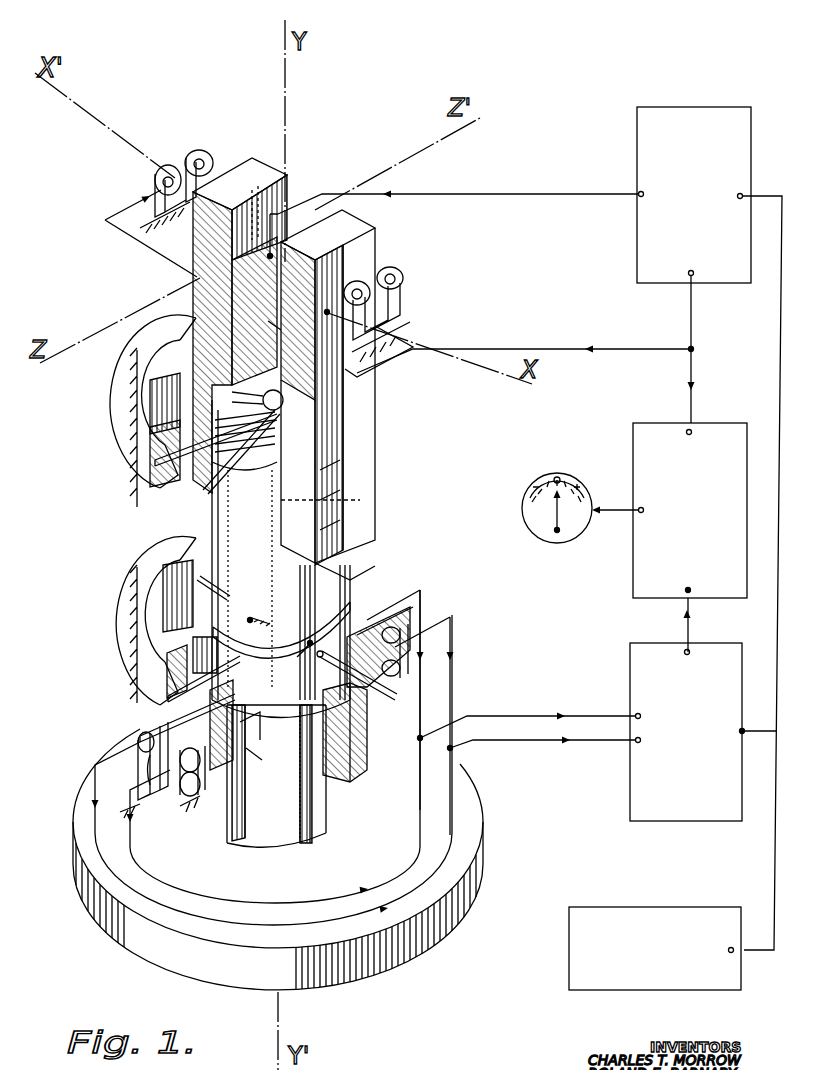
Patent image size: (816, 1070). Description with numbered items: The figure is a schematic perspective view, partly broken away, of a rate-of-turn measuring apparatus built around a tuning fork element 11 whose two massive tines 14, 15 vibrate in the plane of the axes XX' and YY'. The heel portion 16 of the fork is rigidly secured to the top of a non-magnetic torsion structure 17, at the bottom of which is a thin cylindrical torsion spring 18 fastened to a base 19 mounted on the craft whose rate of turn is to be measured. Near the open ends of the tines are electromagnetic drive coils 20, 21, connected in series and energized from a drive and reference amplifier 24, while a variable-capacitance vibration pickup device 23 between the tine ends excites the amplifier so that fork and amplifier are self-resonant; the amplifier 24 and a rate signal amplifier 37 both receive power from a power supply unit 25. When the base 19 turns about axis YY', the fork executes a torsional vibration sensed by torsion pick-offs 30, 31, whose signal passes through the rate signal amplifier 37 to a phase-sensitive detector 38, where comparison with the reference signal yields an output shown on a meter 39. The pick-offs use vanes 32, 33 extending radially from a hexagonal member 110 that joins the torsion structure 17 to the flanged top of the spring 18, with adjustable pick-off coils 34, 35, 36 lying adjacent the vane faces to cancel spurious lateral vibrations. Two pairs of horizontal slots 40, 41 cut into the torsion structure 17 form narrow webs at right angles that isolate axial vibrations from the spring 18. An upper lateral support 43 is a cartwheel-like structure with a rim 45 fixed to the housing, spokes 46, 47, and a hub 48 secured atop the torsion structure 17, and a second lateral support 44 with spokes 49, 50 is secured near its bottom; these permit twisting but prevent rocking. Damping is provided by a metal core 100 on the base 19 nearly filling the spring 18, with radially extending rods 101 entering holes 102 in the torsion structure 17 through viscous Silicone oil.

The tuning fork element 11 is at (378, 484).
The tine 14 is at (238, 172).
The tine 15 is at (362, 226).
The heel portion 16 is at (240, 514).
The torsion structure 17 is at (372, 543).
The cylindrical torsion spring 18 is at (328, 796).
The base 19 is at (472, 840).
The drive coil 20 is at (142, 155).
The drive coil 21 is at (415, 278).
The vibration pickup device 23 is at (212, 262).
The drive and reference amplifier 24 is at (636, 228).
The power supply unit 25 is at (572, 956).
The torsion pick-off 30 is at (436, 597).
The torsion pick-off 31 is at (90, 718).
The vane 32 is at (440, 620).
The vane 33 is at (150, 796).
The pick-off coil 34 is at (423, 660).
The pick-off coil 35 is at (140, 728).
The pick-off coil 36 is at (192, 793).
The rate signal amplifier 37 is at (632, 781).
The phase-sensitive detector 38 is at (638, 425).
The meter 39 is at (532, 480).
The slots 40 is at (212, 631).
The slots 41 is at (284, 652).
The upper lateral support 43 is at (103, 383).
The second lateral support 44 is at (93, 628).
The rim 45 is at (142, 437).
The spoke 46 is at (148, 462).
The spoke 47 is at (200, 490).
The hub 48 is at (310, 430).
The spoke 49 is at (196, 580).
The spoke 50 is at (165, 692).
The metal core 100 is at (326, 826).
The radially extending rods 101 is at (256, 738).
The holes 102 is at (252, 773).
The hexagonal member 110 is at (366, 760).